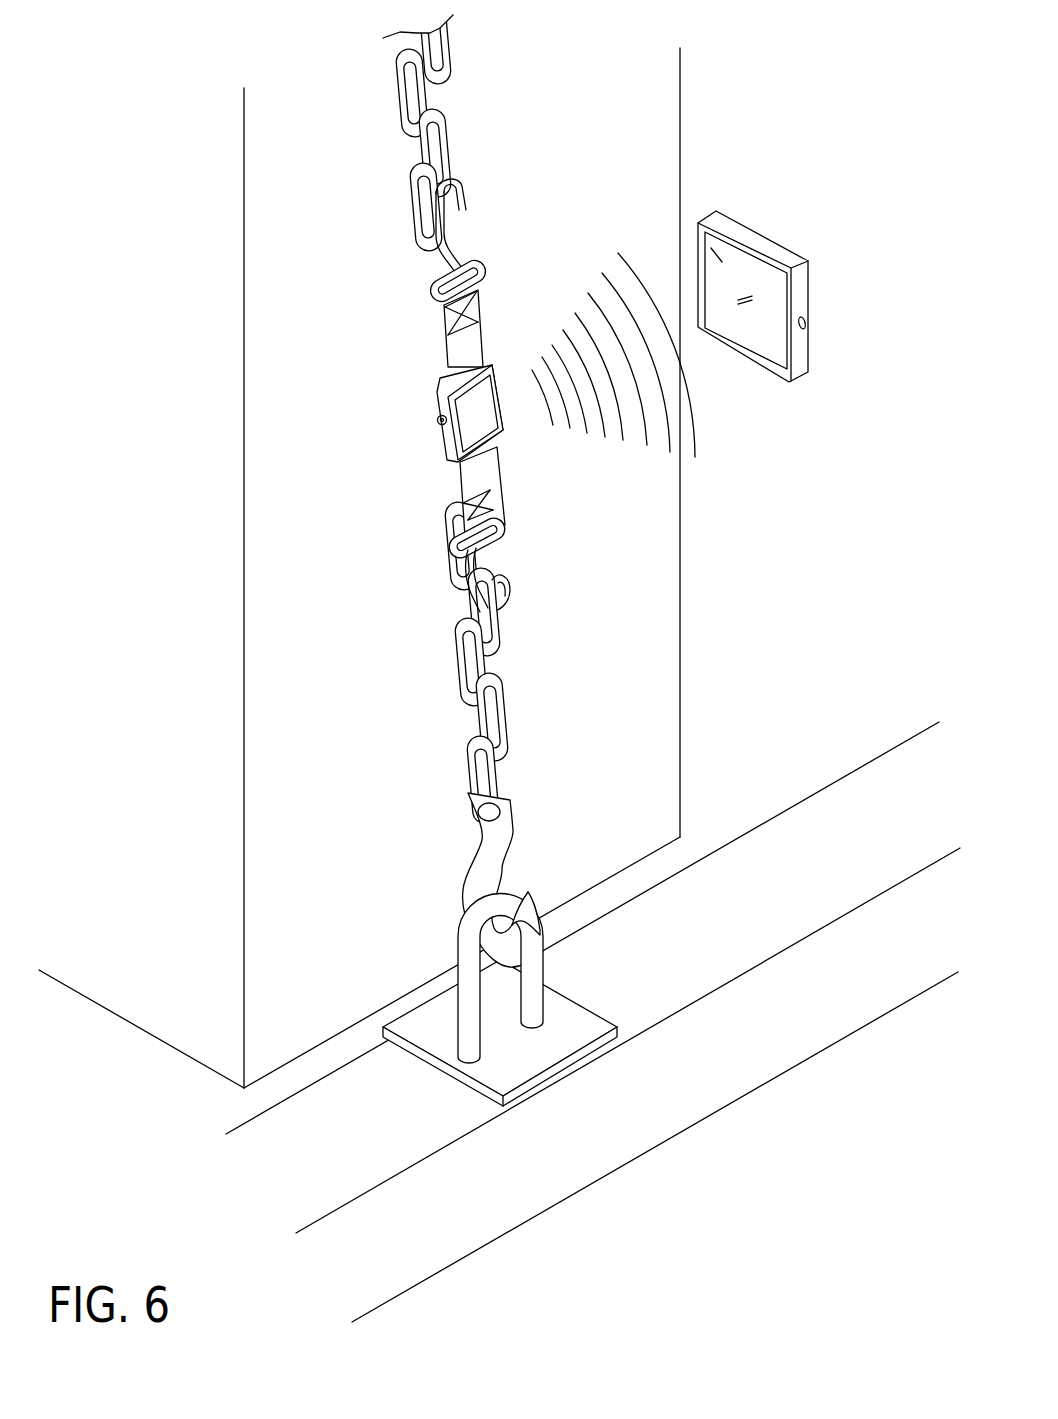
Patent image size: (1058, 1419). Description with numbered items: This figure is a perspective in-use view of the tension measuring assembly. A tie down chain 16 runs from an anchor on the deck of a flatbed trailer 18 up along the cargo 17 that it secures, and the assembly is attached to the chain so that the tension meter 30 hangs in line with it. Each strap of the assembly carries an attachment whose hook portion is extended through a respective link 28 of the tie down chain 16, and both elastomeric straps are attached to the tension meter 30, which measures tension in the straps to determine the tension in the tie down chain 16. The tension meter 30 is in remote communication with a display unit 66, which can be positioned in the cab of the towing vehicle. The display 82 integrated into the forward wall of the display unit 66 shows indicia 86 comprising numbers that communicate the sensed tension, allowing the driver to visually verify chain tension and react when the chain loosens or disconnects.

The tie down chain 16 is at (497, 124).
The cargo 17 is at (682, 148).
The flatbed trailer 18 is at (797, 840).
The link 28 is at (412, 212).
The tension meter 30 is at (398, 418).
The display unit 66 is at (847, 259).
The display 82 is at (786, 343).
The indicia 86 is at (737, 383).